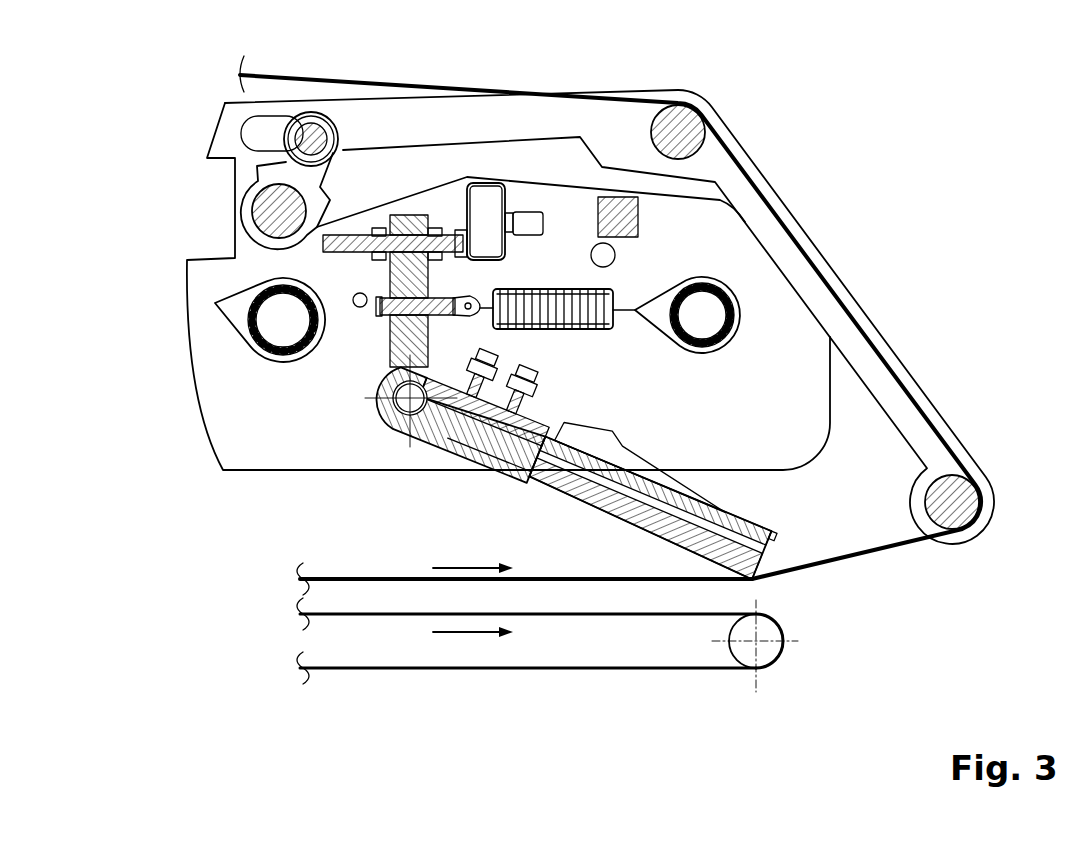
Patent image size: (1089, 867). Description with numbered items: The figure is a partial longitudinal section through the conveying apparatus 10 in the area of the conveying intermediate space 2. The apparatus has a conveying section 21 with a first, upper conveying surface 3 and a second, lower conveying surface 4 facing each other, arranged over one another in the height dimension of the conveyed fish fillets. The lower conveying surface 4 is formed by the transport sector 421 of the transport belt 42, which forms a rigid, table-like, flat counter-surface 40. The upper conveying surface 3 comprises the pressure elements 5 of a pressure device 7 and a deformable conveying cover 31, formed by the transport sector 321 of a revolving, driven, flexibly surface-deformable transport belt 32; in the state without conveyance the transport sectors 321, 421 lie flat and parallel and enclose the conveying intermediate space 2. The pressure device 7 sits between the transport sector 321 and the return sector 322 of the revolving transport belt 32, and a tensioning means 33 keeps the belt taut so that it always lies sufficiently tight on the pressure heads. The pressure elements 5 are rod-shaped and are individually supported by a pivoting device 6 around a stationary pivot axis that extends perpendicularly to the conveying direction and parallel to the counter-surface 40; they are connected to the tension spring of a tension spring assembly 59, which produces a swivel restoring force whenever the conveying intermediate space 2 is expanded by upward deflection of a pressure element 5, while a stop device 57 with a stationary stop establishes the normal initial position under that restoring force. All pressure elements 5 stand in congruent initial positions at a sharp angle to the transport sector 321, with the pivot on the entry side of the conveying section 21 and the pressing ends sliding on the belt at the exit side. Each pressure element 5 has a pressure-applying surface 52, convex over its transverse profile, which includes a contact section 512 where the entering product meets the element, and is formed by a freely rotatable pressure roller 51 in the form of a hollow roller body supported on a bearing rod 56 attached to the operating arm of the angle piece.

The conveying intermediate space 2 is at (663, 597).
The upper conveying surface 3 is at (752, 596).
The lower conveying surface 4 is at (734, 676).
The counter-surface 40 is at (698, 613).
The pressure element 5 is at (423, 437).
The pivoting device 6 is at (346, 391).
The pressure device 7 is at (533, 170).
The conveying apparatus 10 is at (609, 288).
The conveying section 21 is at (624, 611).
The conveying cover 31 is at (557, 583).
The transport belt 32 is at (610, 335).
The tensioning means 33 is at (265, 112).
The transport belt 42 is at (540, 675).
The pressure roller 51 is at (670, 500).
The pressure-applying surface 52 is at (616, 509).
The bearing rod 56 is at (683, 503).
The stop device 57 is at (455, 210).
The tension spring assembly 59 is at (628, 278).
The transport sector 321 is at (368, 578).
The return sector 322 is at (640, 98).
The transport sector 421 is at (405, 617).
The contact section 512 is at (635, 527).